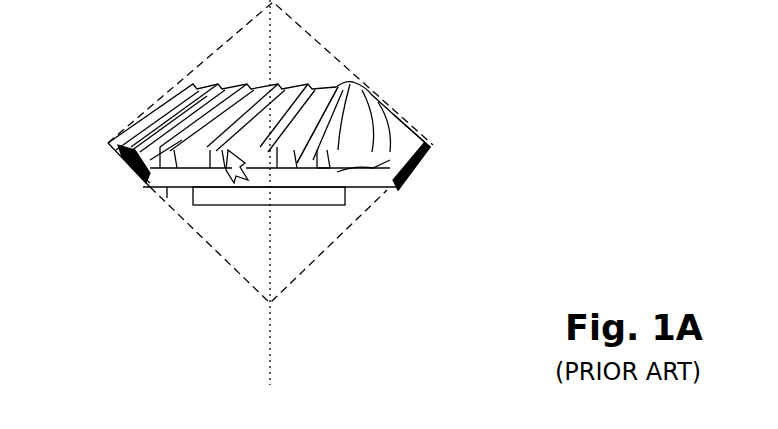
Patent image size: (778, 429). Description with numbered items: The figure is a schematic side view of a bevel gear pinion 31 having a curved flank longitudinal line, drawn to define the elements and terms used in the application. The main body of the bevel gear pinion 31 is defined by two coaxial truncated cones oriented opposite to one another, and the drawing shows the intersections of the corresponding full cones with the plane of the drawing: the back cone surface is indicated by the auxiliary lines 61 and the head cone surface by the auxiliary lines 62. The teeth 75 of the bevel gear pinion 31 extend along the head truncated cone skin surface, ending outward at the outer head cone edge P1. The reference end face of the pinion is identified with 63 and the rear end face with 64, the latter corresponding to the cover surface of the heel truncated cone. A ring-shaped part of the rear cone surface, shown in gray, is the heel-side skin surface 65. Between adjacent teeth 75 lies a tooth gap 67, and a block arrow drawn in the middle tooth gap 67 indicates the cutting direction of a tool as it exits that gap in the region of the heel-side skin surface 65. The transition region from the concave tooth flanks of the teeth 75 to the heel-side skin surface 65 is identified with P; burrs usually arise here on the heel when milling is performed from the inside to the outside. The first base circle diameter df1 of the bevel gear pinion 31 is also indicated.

The bevel gear pinion 31 is at (480, 31).
The back cone surface auxiliary lines 61 is at (228, 262).
The head cone surface auxiliary lines 62 is at (240, 26).
The reference end face 63 is at (227, 208).
The rear end face 64 is at (162, 197).
The heel-side skin surface 65 is at (137, 172).
The tooth gap 67 is at (344, 120).
The teeth 75 is at (182, 140).
The transition region P is at (335, 169).
The outer head cone edge P1 is at (452, 137).
The first base circle diameter df1 is at (410, 187).